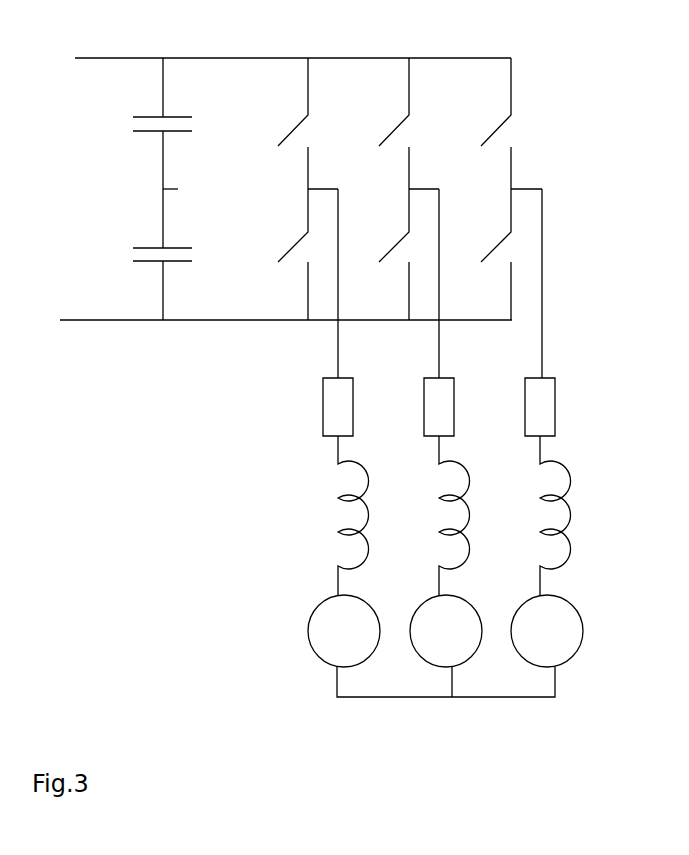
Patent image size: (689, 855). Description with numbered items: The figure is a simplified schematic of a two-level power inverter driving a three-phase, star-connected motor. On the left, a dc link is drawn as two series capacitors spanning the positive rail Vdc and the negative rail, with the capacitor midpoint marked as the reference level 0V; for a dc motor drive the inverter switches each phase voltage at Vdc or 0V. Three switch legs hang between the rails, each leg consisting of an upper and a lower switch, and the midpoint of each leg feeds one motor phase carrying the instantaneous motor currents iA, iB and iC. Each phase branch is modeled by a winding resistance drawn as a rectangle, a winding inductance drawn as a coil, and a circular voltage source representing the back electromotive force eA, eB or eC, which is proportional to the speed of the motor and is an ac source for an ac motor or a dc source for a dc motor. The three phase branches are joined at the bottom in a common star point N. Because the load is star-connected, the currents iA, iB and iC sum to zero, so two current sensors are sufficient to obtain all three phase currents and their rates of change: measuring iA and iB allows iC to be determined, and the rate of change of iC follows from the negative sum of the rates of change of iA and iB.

The dc link voltage Vdc is at (148, 198).
The zero voltage level 0V is at (190, 183).
The phase-A motor current iA is at (346, 376).
The phase-B motor current iB is at (446, 376).
The phase-C motor current iC is at (548, 376).
The phase-A back emf eA is at (344, 631).
The phase-B back emf eB is at (446, 631).
The phase-C back emf eC is at (547, 631).
The star point N is at (446, 699).